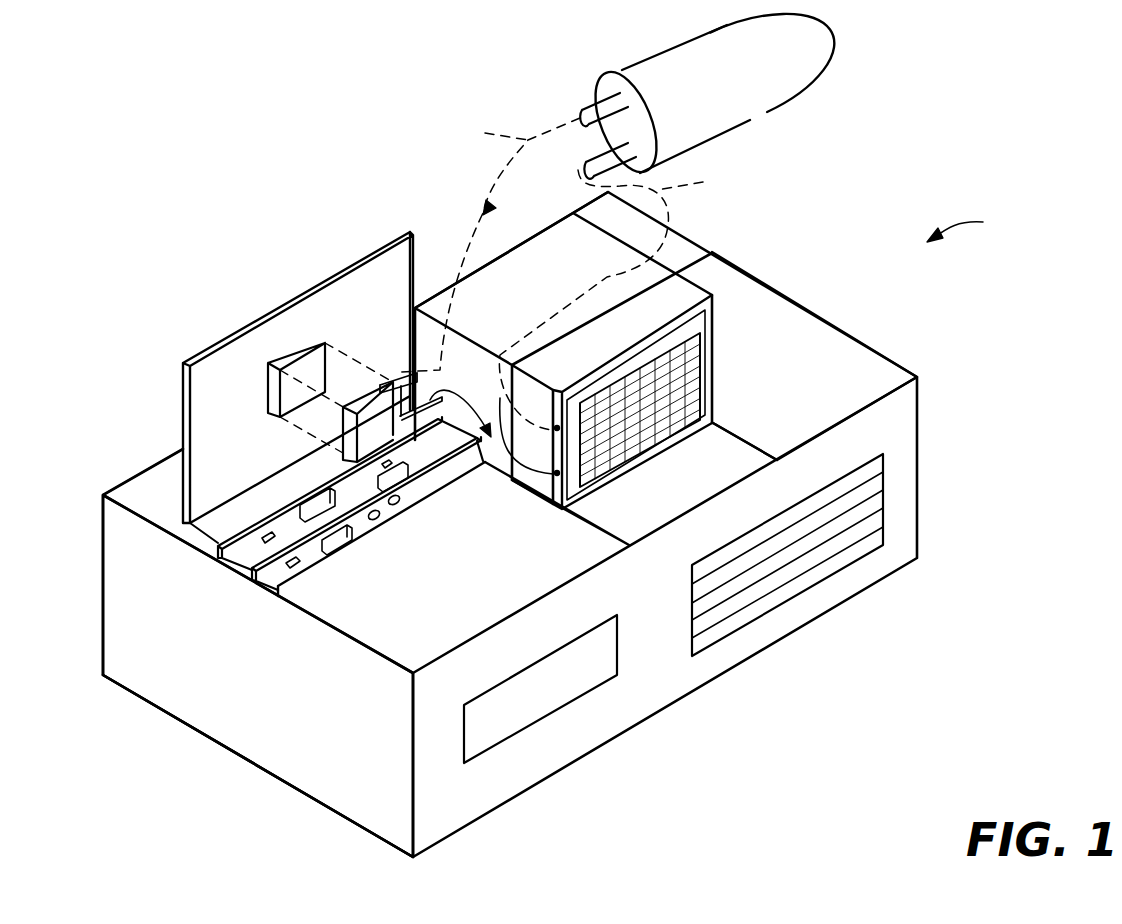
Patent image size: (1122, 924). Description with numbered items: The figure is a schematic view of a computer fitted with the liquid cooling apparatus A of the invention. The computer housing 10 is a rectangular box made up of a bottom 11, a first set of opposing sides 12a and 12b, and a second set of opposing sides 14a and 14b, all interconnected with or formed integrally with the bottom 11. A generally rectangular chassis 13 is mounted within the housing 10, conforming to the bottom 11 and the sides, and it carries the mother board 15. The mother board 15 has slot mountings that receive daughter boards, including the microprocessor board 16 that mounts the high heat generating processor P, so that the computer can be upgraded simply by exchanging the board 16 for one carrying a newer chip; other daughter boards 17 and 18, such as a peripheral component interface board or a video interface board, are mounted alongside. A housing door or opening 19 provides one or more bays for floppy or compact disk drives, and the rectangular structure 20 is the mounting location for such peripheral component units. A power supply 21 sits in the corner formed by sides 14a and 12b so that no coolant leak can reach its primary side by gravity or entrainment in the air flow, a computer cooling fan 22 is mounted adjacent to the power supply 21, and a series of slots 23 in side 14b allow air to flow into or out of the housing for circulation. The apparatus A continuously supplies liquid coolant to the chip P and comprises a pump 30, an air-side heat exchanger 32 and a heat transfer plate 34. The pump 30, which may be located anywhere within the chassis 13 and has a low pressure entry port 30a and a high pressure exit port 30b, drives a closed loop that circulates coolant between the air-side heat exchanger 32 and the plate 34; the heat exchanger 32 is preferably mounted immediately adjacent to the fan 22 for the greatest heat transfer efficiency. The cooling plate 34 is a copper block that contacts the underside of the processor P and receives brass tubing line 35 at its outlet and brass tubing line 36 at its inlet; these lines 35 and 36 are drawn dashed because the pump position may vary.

The computer housing 10 is at (930, 488).
The bottom 11 is at (228, 753).
The first opposing side 12a is at (252, 672).
The first opposing side 12b is at (845, 367).
The chassis 13 is at (760, 440).
The second opposing side 14a is at (135, 487).
The second opposing side 14b is at (680, 590).
The mother board 15 is at (672, 496).
The microprocessor board 16 is at (207, 368).
The daughter board 17 is at (228, 561).
The daughter board 18 is at (253, 573).
The housing door or opening 19 is at (536, 707).
The mounting location 20 is at (444, 593).
The power supply 21 is at (546, 294).
The computer cooling fan 22 is at (721, 337).
The slots 23 is at (804, 569).
The pump 30 is at (682, 106).
The low pressure entry port 30a is at (585, 168).
The high pressure exit port 30b is at (588, 102).
The air-side heat exchanger 32 is at (720, 315).
The heat transfer plate 34 is at (375, 417).
The brass tubing line 35 is at (616, 299).
The brass tubing line 36 is at (490, 296).
The high heat generating processor P is at (303, 367).
The apparatus A is at (967, 227).